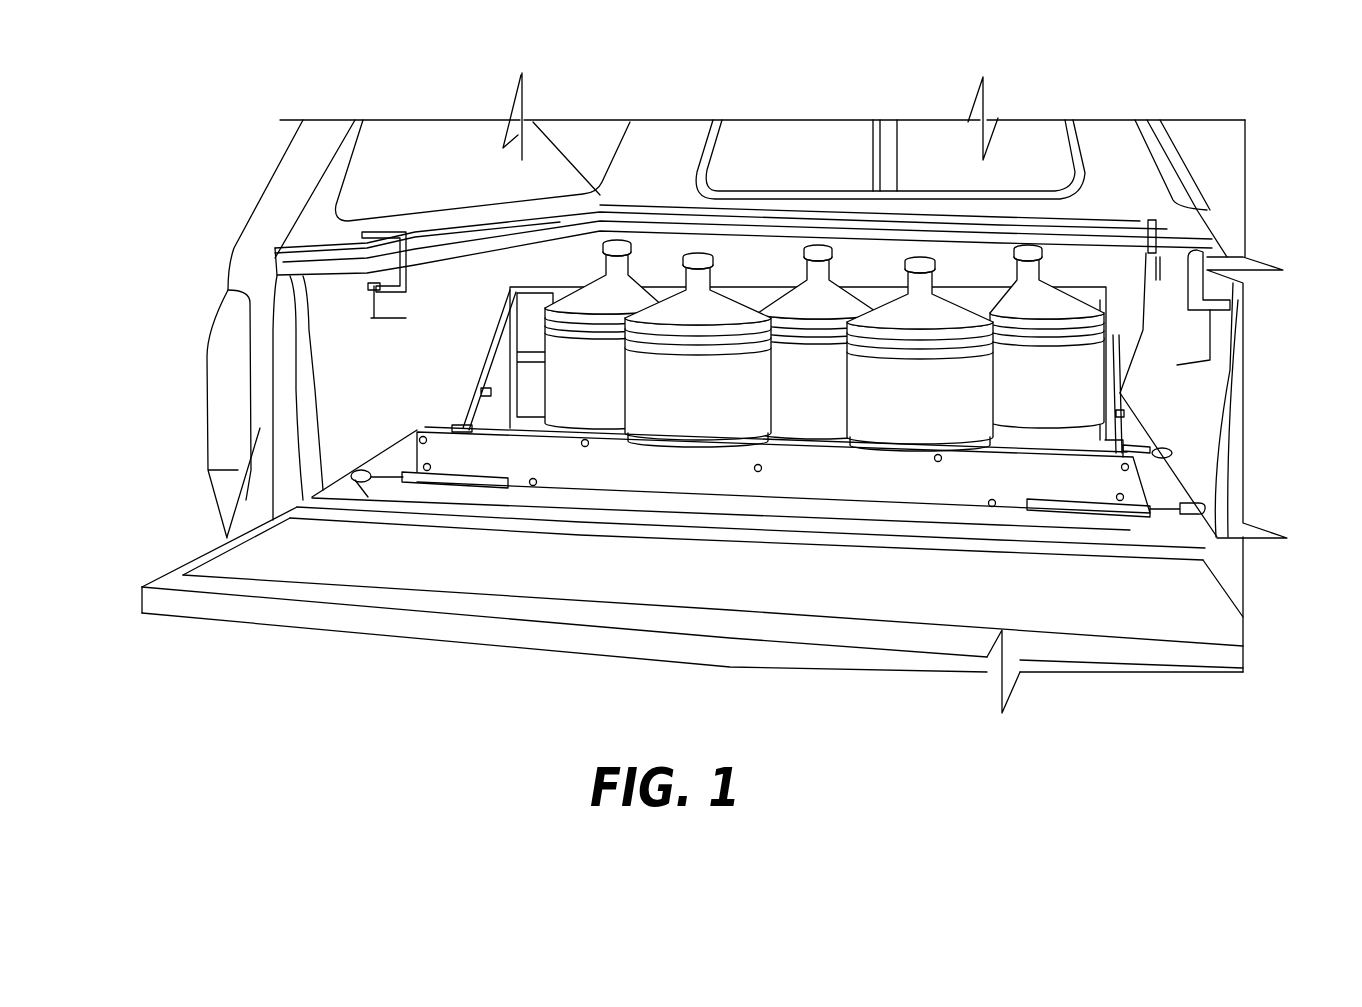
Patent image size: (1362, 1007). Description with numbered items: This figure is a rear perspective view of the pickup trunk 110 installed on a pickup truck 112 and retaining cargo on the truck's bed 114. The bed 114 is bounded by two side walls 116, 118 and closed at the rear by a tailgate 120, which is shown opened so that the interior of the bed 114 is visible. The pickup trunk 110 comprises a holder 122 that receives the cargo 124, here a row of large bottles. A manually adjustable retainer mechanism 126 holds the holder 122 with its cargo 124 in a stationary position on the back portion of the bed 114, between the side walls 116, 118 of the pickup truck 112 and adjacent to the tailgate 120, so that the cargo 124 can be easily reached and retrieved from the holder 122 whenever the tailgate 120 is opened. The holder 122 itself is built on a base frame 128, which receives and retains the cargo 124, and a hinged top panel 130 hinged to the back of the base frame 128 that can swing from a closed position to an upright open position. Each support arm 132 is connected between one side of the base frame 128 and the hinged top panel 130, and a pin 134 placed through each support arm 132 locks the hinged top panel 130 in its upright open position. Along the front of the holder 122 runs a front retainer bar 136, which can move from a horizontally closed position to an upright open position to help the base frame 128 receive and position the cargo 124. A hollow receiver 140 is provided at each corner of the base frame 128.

The pickup trunk 110 is at (816, 360).
The pickup truck 112 is at (905, 119).
The bed 114 is at (343, 477).
The side wall 116 is at (434, 300).
The side wall 118 is at (1173, 340).
The tailgate 120 is at (237, 612).
The holder 122 is at (765, 291).
The cargo 124 is at (1036, 322).
The manually adjustable retainer mechanism 126 is at (1192, 512).
The base frame 128 is at (1104, 510).
The hinged top panel 130 is at (528, 284).
The support arm 132 is at (490, 355).
The pin 134 is at (488, 393).
The front retainer bar 136 is at (866, 483).
The hollow receiver 140 is at (363, 470).